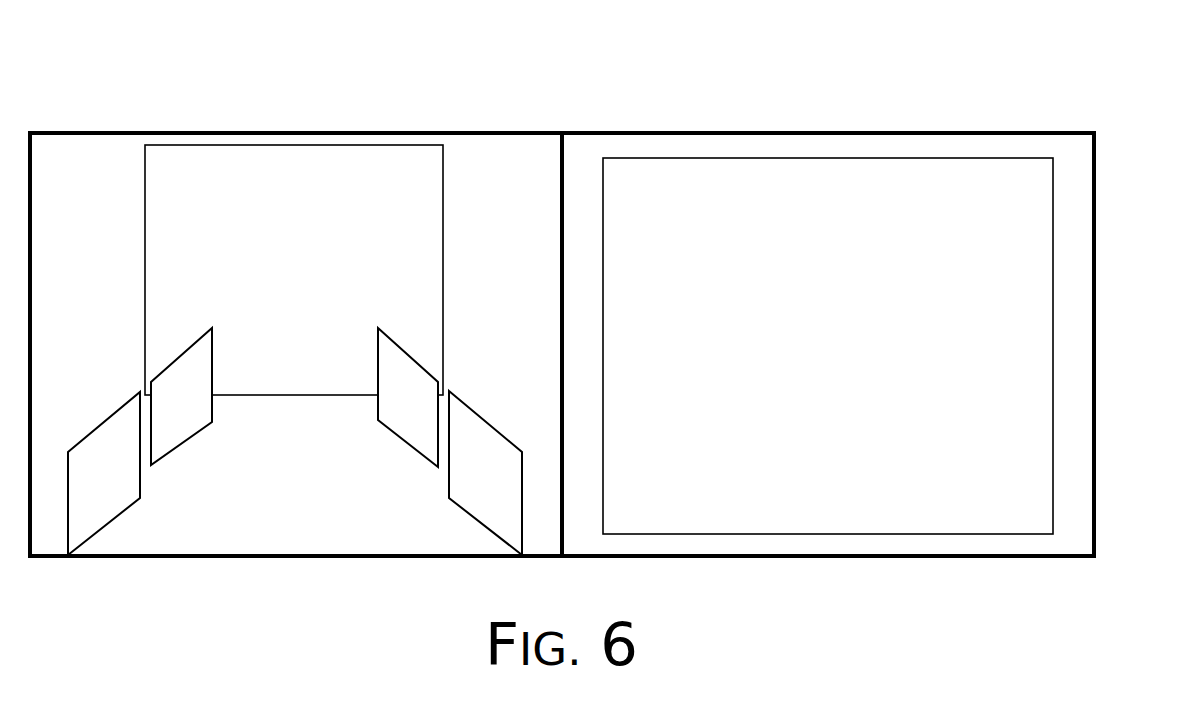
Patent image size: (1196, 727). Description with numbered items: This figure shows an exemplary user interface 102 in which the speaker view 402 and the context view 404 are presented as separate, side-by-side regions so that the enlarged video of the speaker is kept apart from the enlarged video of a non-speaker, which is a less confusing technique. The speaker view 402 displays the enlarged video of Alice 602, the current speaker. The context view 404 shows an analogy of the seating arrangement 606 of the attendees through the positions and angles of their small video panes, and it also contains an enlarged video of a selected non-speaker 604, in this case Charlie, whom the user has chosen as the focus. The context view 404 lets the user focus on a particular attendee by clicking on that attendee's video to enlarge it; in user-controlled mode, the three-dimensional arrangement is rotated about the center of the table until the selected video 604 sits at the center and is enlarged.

The user interface 102 is at (587, 38).
The context view 404 is at (407, 121).
The speaker view 402 is at (930, 117).
The enlarged video of a selected non-speaker 604 is at (367, 232).
The enlarged video of the speaker view 602 is at (1033, 229).
The seating arrangement 606 is at (367, 505).